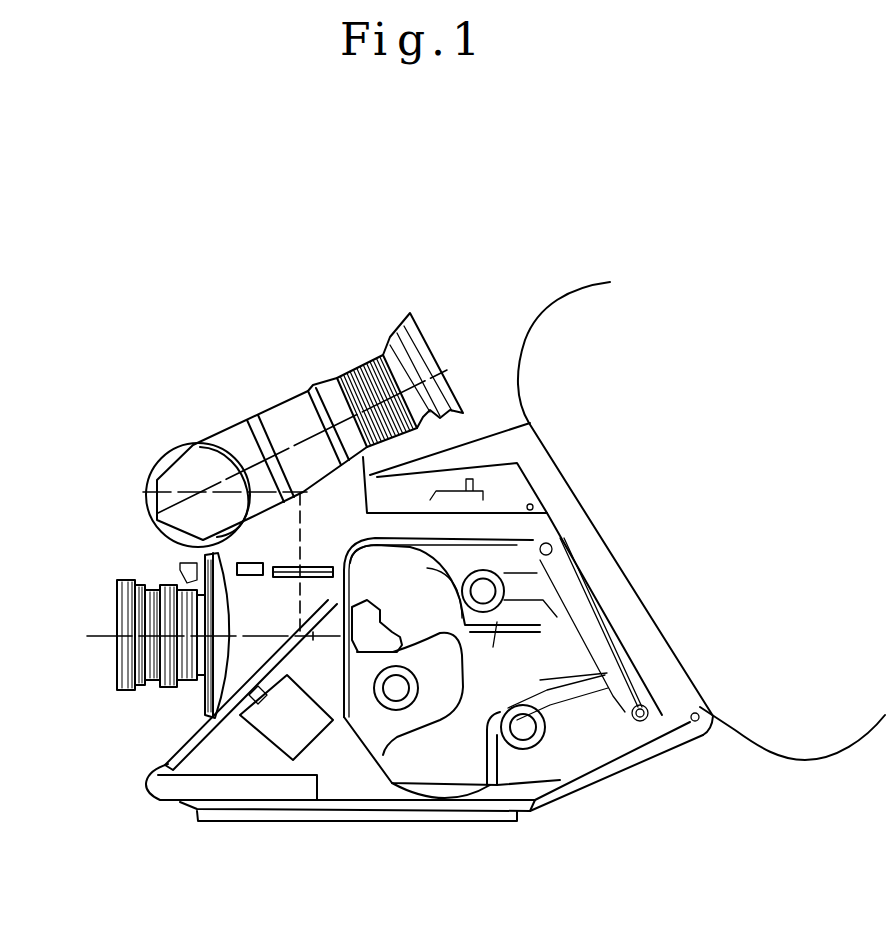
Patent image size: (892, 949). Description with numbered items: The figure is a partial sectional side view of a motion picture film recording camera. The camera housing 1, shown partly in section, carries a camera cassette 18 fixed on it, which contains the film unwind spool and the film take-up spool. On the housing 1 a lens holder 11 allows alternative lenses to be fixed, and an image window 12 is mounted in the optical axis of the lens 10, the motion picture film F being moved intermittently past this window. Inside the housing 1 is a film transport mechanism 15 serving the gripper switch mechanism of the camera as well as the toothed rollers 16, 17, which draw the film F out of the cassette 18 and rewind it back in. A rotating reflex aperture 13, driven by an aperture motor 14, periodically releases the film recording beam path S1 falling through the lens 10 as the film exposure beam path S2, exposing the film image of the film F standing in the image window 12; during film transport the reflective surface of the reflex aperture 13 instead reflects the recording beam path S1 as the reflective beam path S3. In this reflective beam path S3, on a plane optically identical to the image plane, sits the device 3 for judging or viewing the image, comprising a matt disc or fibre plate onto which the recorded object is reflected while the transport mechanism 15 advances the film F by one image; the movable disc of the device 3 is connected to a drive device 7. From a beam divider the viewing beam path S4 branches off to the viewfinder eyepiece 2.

The camera housing 1 is at (272, 781).
The viewfinder eyepiece 2 is at (280, 414).
The device for judging or viewing the image 3 is at (320, 564).
The drive device 7 is at (250, 577).
The lens 10 is at (123, 580).
The lens holder 11 is at (200, 697).
The image window 12 is at (353, 635).
The rotating reflex aperture 13 is at (208, 755).
The aperture motor 14 is at (297, 733).
The film transport mechanism 15 is at (423, 762).
The toothed roller 16 is at (500, 575).
The toothed roller 17 is at (547, 727).
The camera cassette 18 is at (567, 353).
The motion picture film F is at (537, 807).
The film recording beam path S1 is at (97, 637).
The film exposure beam path S2 is at (313, 634).
The reflective beam path S3 is at (300, 550).
The viewing beam path S4 is at (193, 445).